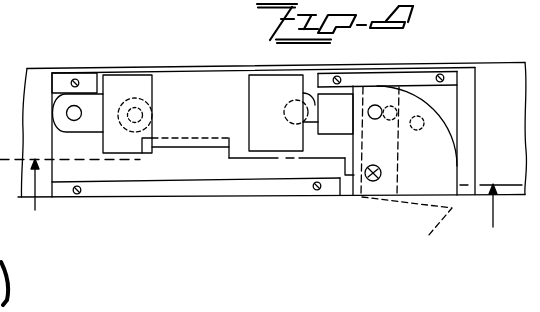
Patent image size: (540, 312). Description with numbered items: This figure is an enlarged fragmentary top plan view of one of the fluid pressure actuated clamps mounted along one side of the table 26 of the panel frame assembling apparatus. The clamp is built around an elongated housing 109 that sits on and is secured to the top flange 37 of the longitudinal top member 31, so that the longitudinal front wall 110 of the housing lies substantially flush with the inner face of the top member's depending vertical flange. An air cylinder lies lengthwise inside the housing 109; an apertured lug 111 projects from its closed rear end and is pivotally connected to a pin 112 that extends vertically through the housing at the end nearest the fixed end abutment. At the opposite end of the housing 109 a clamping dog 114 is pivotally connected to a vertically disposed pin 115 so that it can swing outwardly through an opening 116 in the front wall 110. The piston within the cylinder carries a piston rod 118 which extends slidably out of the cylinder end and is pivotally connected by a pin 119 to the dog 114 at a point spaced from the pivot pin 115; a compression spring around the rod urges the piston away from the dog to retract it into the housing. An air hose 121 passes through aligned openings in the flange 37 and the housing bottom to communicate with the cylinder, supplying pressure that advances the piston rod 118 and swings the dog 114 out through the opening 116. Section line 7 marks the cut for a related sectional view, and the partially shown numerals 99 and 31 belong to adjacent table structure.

The table 26 is at (271, 99).
The housing 109 is at (473, 132).
The front wall 110 is at (205, 199).
The apertured lug 111 is at (127, 114).
The pin 112 is at (77, 106).
The clamping dog 114 is at (425, 181).
The pin 115 is at (373, 181).
The opening 116 is at (343, 198).
The piston rod 118 is at (301, 93).
The pin 119 is at (378, 105).
The air hose 121 is at (151, 117).
The section line 7- 7 is at (276, 200).
The adjacent figure element 99 is at (5, 214).
The top flange 37 is at (9, 248).
The top member 31 is at (7, 282).